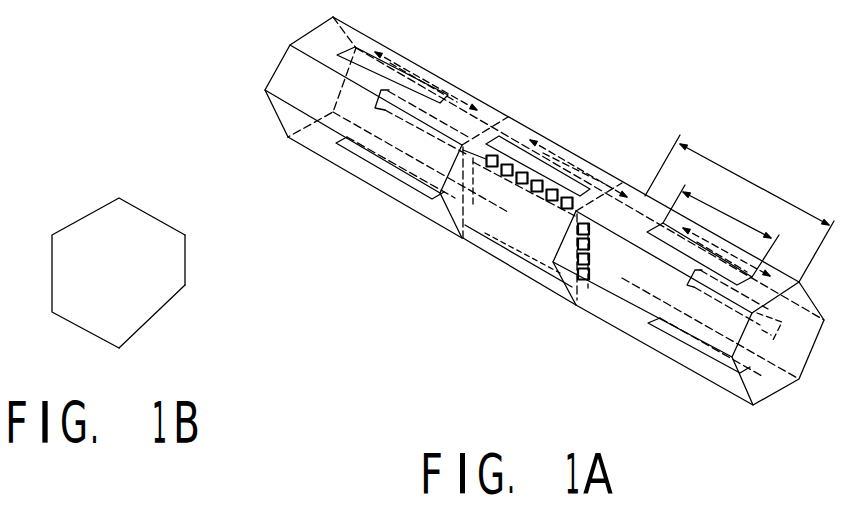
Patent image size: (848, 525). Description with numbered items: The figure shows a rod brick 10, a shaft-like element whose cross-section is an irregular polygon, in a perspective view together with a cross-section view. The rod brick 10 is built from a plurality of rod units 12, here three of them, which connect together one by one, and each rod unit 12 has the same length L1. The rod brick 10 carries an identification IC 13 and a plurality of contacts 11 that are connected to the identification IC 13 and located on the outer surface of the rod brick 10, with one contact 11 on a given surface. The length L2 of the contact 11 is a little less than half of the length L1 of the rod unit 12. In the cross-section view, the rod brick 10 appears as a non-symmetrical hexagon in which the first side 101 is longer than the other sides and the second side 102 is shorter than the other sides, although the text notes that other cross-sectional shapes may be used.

In FIG. 1A, the rod brick 10 is at (505, 108).
In FIG. 1B, the rod brick 10 is at (150, 190).
In FIG. 1A, the contact 11 is at (318, 35).
In FIG. 1A, the rod unit 12 is at (618, 321).
In FIG. 1A, the identification IC 13 is at (490, 208).
In FIG. 1B, the first side 101 is at (153, 315).
In FIG. 1B, the second side 102 is at (187, 253).
In FIG. 1A, the length of the rod unit L1 is at (739, 208).
In FIG. 1A, the length of the contact L2 is at (721, 227).